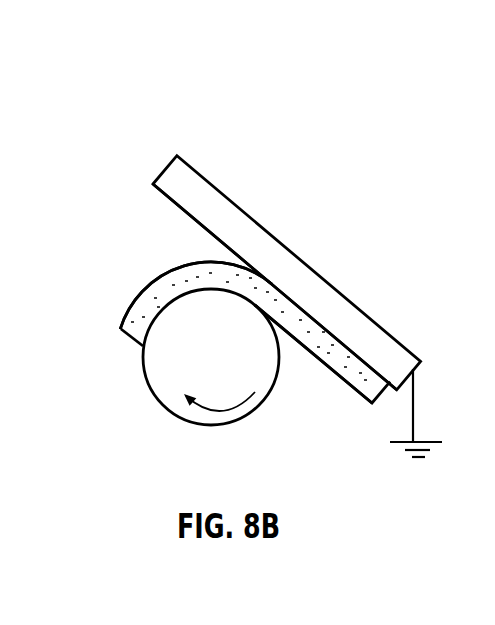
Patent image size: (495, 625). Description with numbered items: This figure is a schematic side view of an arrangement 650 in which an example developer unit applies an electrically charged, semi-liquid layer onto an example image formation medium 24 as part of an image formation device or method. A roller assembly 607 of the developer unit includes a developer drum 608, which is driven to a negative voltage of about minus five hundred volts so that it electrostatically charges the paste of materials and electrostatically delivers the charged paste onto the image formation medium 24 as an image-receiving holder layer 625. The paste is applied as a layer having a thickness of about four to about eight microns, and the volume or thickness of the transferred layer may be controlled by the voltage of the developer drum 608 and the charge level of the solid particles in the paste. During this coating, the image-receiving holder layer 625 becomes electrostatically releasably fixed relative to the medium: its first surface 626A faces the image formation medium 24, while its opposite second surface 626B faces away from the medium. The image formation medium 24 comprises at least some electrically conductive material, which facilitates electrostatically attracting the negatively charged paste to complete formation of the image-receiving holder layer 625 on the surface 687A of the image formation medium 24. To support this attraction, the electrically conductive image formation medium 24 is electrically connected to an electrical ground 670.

The charging system 650 is at (113, 78).
The image formation medium 24 is at (170, 162).
The surface of the image formation medium 687A is at (200, 221).
The image-receiving holder layer 625 is at (133, 307).
The first surface 626A is at (182, 265).
The second surface 626B is at (315, 357).
The roller assembly 607 is at (144, 370).
The developer drum 608 is at (228, 368).
The electrical ground 670 is at (446, 490).